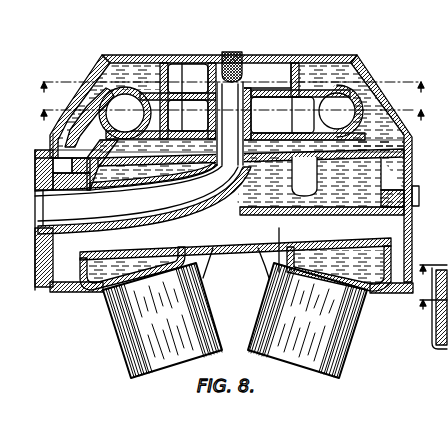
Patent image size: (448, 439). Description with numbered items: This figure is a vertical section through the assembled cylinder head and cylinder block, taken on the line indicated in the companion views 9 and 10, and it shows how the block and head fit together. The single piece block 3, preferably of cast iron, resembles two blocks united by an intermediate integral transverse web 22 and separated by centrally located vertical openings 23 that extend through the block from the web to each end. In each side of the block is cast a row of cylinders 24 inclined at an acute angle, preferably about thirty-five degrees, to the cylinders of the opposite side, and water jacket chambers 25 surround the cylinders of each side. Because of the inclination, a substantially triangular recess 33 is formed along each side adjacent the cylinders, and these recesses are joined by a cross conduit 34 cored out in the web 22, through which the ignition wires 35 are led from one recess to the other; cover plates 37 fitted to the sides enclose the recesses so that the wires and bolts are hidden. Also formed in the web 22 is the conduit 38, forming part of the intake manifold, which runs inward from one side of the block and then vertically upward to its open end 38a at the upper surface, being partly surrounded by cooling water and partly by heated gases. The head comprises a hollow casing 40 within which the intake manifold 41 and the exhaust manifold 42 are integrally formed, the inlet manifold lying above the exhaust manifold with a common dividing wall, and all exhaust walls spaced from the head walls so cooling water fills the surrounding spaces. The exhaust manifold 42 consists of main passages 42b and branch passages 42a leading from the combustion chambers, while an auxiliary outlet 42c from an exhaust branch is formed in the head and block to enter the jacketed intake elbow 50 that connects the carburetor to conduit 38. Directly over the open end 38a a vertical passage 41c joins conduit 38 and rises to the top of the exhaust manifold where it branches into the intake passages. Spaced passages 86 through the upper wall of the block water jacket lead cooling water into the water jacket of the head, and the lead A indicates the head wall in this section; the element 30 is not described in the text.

The single piece block 3 is at (118, 340).
The section line 9 is at (239, 220).
The section line 10 is at (241, 186).
The transverse web 22 is at (238, 246).
The vertical openings 23 is at (236, 274).
The cylinders 24 is at (236, 320).
The water jacket chambers 25 is at (100, 297).
The wall flange 30 is at (400, 293).
The triangular recess 33 is at (63, 300).
The cross conduit 34 is at (283, 272).
The ignition wires 35 is at (422, 212).
The cover plates 37 is at (54, 285).
The conduit 38 is at (136, 193).
The open end of the intake conduit 38a is at (144, 197).
The hollow casing 40 is at (158, 57).
The intake manifold 41 is at (277, 103).
The vertical passage 41c is at (241, 66).
The exhaust manifold 42 is at (443, 352).
The branch passages 42a is at (361, 40).
The main passages 42b is at (187, 60).
The auxiliary outlet 42c is at (80, 113).
The jacketed intake elbow 50 is at (48, 213).
The spaced passages 86 is at (414, 164).
The housing wall A is at (364, 67).